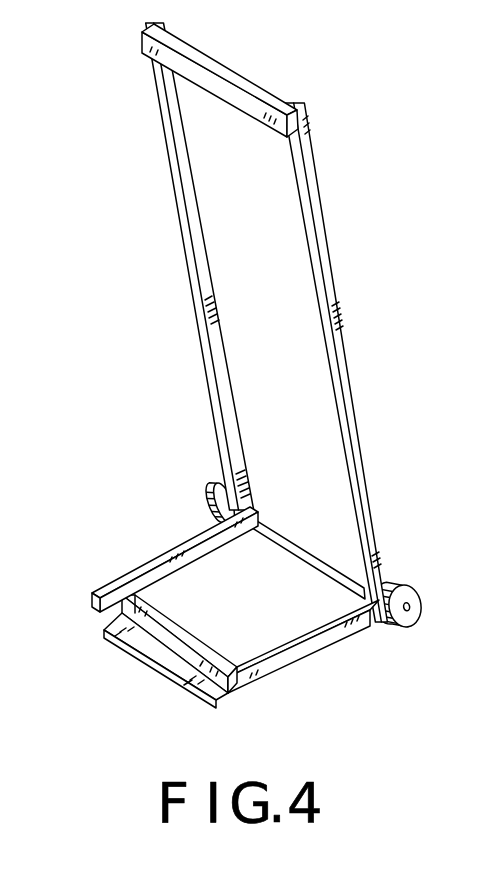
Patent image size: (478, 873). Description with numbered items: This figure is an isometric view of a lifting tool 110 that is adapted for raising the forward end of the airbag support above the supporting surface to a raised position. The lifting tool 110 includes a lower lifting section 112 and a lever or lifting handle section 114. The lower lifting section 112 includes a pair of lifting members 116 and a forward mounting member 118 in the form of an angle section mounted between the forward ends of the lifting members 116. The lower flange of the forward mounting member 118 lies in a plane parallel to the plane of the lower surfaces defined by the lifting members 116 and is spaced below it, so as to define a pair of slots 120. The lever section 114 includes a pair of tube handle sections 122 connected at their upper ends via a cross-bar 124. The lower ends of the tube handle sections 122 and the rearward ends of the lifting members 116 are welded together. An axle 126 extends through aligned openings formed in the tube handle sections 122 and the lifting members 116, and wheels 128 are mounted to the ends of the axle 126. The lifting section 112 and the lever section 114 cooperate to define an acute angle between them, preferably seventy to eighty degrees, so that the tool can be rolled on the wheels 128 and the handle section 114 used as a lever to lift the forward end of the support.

The lifting tool 110 is at (149, 275).
The lower lifting section 112 is at (163, 515).
The lever or lifting handle section 114 is at (370, 306).
The lifting members 116 is at (267, 652).
The forward mounting member 118 is at (143, 670).
The slots 120 is at (98, 625).
The tube handle sections 122 is at (313, 265).
The cross-bar 124 is at (241, 80).
The axle 126 is at (290, 539).
The wheels 128 is at (216, 488).